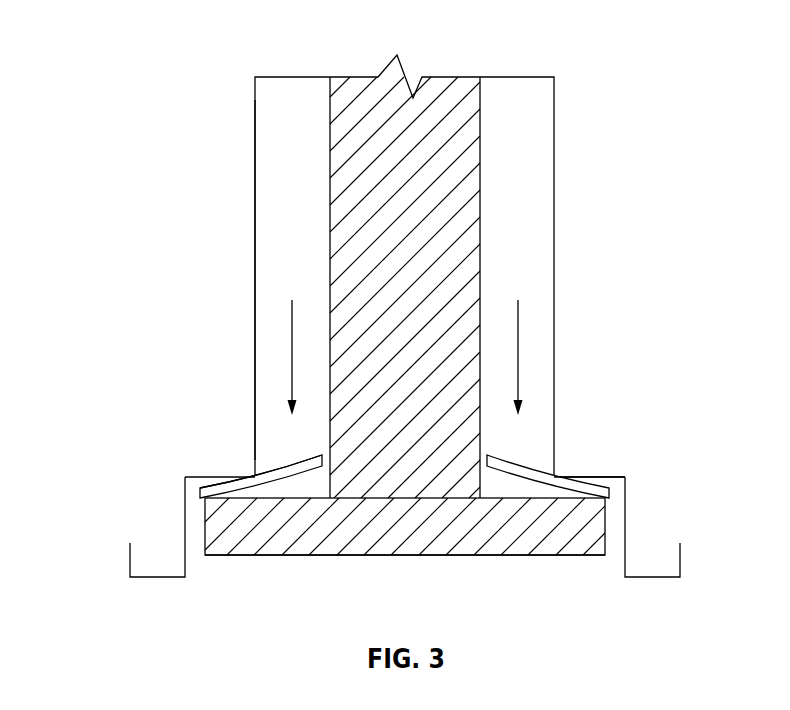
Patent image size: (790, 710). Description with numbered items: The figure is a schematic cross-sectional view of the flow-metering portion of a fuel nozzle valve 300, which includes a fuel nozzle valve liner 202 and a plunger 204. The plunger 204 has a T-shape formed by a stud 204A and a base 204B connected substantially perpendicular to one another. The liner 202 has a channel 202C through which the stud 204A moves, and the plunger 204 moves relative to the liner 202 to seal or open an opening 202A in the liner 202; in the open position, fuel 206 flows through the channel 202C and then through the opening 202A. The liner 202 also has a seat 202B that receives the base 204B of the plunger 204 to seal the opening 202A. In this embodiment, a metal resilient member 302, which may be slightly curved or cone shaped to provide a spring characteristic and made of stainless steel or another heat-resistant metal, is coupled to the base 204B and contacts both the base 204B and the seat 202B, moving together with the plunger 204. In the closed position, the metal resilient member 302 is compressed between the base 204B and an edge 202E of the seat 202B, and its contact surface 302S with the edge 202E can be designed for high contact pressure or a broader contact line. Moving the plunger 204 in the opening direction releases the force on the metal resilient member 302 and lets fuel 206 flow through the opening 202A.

The fuel nozzle valve 300 is at (132, 62).
The fuel nozzle valve liner 202 is at (555, 230).
The opening 202A is at (195, 552).
The seat 202B is at (615, 477).
The channel 202C is at (277, 182).
The edge 202E is at (255, 477).
The plunger 204 is at (352, 555).
The stud 204A is at (393, 102).
The base 204B is at (433, 543).
The fuel 206 is at (292, 342).
The metal resilient member 302 is at (286, 466).
The contact surface 302S is at (295, 462).